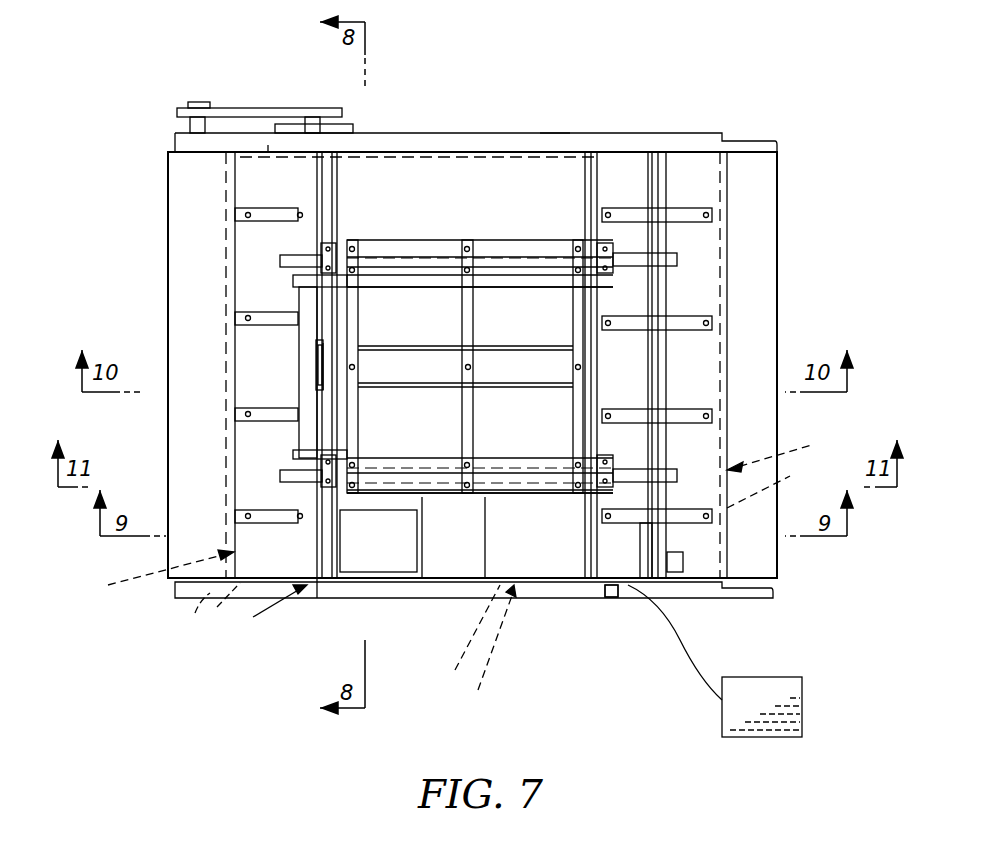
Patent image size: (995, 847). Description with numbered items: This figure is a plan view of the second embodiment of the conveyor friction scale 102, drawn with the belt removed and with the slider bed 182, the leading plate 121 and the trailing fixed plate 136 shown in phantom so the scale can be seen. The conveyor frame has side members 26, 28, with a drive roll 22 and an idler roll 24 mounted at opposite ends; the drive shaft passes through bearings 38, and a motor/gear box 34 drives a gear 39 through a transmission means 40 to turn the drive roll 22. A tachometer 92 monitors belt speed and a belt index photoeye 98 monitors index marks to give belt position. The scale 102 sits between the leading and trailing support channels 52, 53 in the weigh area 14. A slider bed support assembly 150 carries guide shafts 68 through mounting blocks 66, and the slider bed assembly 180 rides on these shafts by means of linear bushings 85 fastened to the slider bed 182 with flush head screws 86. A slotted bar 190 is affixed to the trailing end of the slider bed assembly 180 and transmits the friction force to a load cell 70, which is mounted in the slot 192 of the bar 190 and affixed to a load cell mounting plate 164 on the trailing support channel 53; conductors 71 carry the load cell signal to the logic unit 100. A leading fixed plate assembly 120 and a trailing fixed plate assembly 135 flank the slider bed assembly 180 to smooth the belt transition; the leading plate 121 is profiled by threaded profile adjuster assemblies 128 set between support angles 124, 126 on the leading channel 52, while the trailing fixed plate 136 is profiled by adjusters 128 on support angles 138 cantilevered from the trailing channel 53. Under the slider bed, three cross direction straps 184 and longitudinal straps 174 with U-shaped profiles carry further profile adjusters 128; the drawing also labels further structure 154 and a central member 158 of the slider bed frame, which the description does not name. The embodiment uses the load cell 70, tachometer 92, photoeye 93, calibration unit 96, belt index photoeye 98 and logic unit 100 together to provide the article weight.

The weigh area 14 is at (437, 167).
The drive roll 22 is at (185, 247).
The idler roll 24 is at (762, 240).
The side member 26 is at (523, 582).
The side member 28 is at (555, 138).
The motor/gear box 34 is at (350, 128).
The bearings 38 is at (178, 147).
The gear 39 is at (210, 103).
The transmission means 40 is at (227, 108).
The leading support channel 52 is at (650, 560).
The trailing support channel 53 is at (318, 598).
The mounting blocks 66 is at (337, 250).
The guide shafts 68 is at (680, 262).
The load cell 70 is at (318, 350).
The conductors 71 is at (700, 688).
The linear bushings 85 is at (355, 247).
The flush head screws 86 is at (330, 247).
The tachometer 92 is at (271, 150).
The photoeye 93 is at (611, 598).
The calibration unit 96 is at (385, 565).
The belt index photoeye 98 is at (675, 563).
The logic unit 100 is at (802, 712).
The conveyor friction scale 102 is at (262, 616).
The leading fixed plate assembly 120 is at (791, 452).
The leading plate 121 is at (780, 485).
The support angles 124 is at (712, 222).
The support angles 126 is at (608, 212).
The profile adjuster assemblies 128 is at (300, 213).
The trailing fixed plate assembly 135 is at (155, 572).
The trailing fixed plate 136 is at (195, 613).
The support angles 138 is at (240, 215).
The slider bed support assembly 150 is at (492, 580).
The rail assembly 154 is at (437, 245).
The center bar 158 is at (515, 375).
The load cell mounting plate 164 is at (318, 378).
The longitudinal straps 174 is at (463, 242).
The slider bed assembly 180 is at (484, 646).
The slider bed 182 is at (452, 633).
The cross direction straps 184 is at (358, 420).
The slotted bar 190 is at (300, 435).
The slot 192 is at (320, 385).